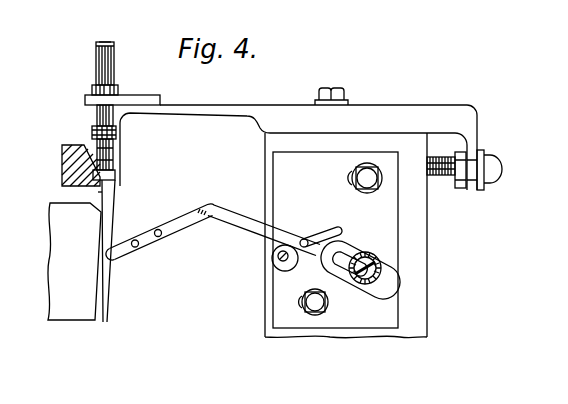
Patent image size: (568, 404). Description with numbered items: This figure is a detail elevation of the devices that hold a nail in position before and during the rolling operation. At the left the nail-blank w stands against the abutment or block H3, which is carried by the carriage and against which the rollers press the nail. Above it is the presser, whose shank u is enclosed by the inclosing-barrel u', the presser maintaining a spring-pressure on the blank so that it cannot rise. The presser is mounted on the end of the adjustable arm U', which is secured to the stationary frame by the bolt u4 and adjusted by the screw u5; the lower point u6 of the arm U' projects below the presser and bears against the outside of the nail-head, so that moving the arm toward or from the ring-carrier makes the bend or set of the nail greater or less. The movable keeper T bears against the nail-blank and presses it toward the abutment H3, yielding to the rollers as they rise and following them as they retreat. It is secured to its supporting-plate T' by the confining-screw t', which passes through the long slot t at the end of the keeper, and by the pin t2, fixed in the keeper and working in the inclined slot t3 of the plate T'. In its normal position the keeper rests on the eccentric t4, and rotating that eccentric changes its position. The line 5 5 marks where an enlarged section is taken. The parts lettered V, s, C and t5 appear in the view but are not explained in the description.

The adjustable arm U' is at (281, 206).
The supporting-plate T' is at (335, 240).
The bolt u4 is at (337, 90).
The screw u5 is at (498, 165).
The shank u is at (120, 53).
The section line 5 is at (103, 34).
The inclosing-barrel u' is at (85, 91).
The lower point of arm u6 is at (120, 181).
The needle holder V is at (114, 165).
The nail-blank w is at (110, 216).
The thread s is at (97, 193).
The guide block C is at (62, 170).
The abutment block H3 is at (74, 261).
The movable keeper T is at (213, 218).
The long slot t is at (360, 259).
The confining-screw t' is at (382, 257).
The pin t2 is at (305, 240).
The inclined slot t3 is at (337, 235).
The eccentric t4 is at (282, 268).
The bolt head t5 is at (372, 178).